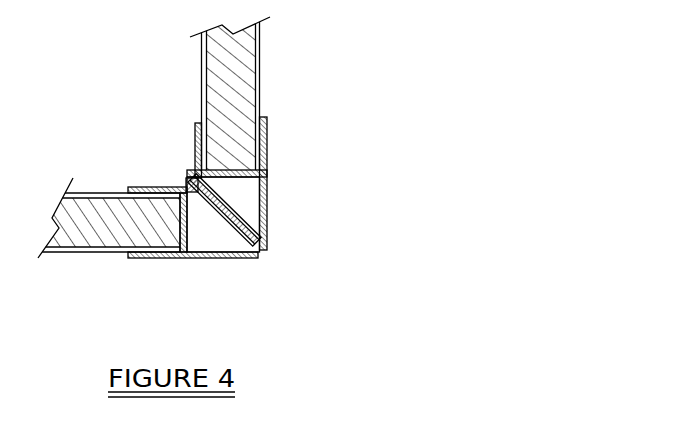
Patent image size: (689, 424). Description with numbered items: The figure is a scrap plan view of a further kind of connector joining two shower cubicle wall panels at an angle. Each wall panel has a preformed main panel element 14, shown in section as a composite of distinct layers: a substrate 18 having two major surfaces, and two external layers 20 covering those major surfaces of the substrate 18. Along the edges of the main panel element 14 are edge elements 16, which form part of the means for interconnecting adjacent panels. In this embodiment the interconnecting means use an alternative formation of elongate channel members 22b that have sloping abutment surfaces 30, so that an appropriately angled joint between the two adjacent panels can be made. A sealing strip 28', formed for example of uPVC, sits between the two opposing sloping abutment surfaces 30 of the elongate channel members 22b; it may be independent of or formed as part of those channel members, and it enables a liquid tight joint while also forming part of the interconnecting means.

The main panel element 14 is at (100, 193).
The edge element 16 is at (286, 205).
The substrate 18 is at (205, 43).
The external layer 20 is at (203, 102).
The elongate channel member 22b is at (267, 172).
The sealing strip 28' is at (157, 161).
The sloping abutment surface 30 is at (218, 250).